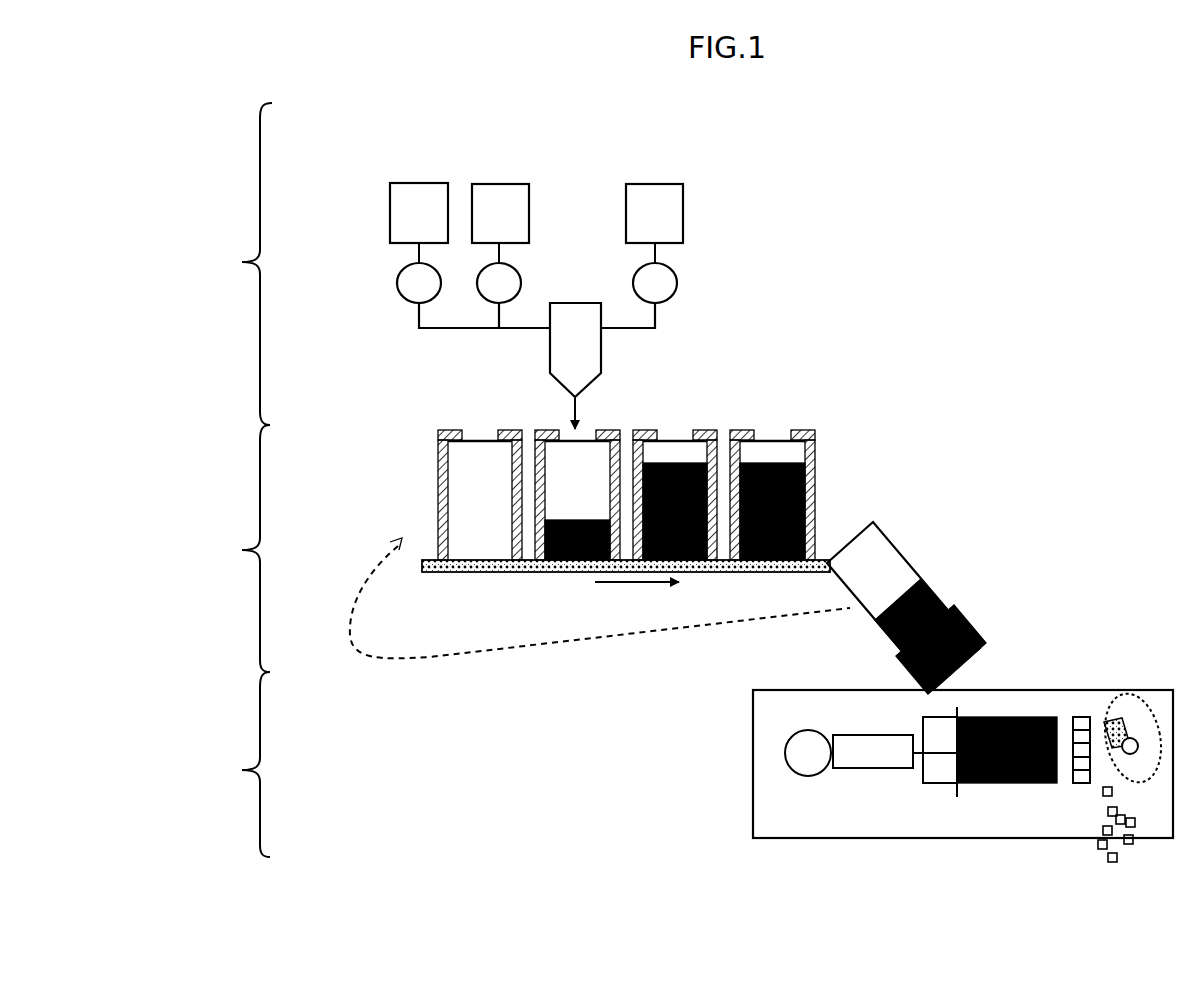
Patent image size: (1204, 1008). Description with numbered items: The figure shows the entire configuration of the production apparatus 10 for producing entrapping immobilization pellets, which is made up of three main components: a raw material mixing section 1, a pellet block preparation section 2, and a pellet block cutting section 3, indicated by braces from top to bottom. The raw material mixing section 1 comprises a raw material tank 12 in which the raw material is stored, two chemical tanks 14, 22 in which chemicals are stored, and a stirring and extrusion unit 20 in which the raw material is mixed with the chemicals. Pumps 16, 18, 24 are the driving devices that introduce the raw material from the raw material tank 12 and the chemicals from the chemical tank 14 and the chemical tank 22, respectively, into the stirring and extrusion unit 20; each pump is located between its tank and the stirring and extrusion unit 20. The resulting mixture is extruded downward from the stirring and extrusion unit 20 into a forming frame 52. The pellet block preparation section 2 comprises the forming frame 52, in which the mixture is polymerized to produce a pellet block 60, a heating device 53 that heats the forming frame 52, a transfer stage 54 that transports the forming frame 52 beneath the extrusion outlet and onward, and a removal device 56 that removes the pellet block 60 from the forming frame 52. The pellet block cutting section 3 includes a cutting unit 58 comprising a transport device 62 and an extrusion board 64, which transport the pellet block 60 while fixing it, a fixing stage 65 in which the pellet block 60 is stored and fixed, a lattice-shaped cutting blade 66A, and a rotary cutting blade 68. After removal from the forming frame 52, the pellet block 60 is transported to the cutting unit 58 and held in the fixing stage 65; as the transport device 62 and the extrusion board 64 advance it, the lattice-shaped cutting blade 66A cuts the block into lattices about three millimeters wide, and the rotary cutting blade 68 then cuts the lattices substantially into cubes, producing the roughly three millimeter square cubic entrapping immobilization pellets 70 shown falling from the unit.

The raw material mixing section 1 is at (239, 264).
The pellet block preparation section 2 is at (238, 548).
The pellet block cutting section 3 is at (238, 764).
The production apparatus 10 is at (800, 134).
The raw material tank 12 is at (418, 183).
The chemical tank 14 is at (501, 184).
The chemical tank 22 is at (656, 184).
The pump 16 is at (398, 287).
The pump 18 is at (514, 287).
The pump 24 is at (670, 287).
The stirring and extrusion unit 20 is at (556, 359).
The forming frame 52 is at (456, 460).
The heating device 53 is at (717, 430).
The transfer stage 54 is at (486, 573).
The removal device 56 is at (853, 540).
The cutting unit 58 is at (1067, 688).
The pellet block 60 is at (968, 632).
The transport device 62 is at (785, 753).
The extrusion board 64 is at (952, 772).
The fixing stage 65 is at (985, 784).
The lattice-shaped cutting blade 66A is at (1068, 768).
The rotary cutting blade 68 is at (1122, 735).
The entrapping immobilization pellets 70 is at (1118, 849).